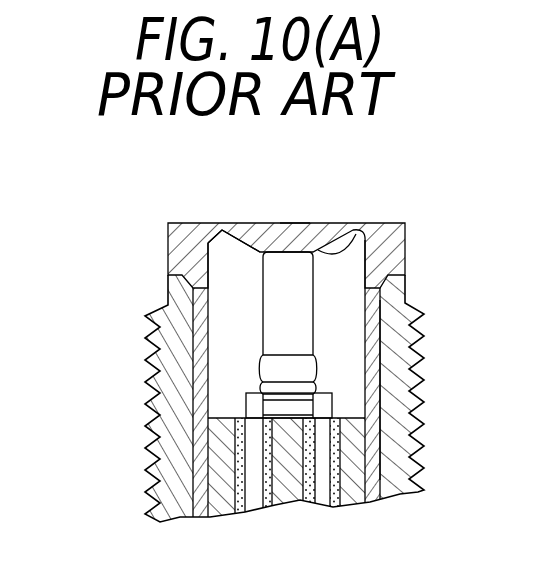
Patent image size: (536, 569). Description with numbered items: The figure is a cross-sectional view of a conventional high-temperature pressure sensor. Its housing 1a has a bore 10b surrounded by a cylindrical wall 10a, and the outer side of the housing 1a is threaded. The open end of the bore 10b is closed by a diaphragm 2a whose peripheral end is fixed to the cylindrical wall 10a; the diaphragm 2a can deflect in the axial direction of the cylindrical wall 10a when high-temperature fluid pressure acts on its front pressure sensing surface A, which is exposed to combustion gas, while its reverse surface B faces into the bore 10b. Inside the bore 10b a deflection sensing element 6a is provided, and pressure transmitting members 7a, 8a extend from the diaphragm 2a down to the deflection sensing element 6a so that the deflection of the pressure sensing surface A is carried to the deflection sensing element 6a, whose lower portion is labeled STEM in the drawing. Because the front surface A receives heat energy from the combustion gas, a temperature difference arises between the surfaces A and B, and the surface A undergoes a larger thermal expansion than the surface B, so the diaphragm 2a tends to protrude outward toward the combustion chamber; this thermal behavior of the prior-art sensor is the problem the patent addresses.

The diaphragm 2a is at (182, 258).
The bore 10b is at (227, 243).
The pressure sensing surface A is at (293, 223).
The reverse surface B is at (350, 232).
The housing 1a is at (434, 421).
The cylindrical wall 10a is at (393, 360).
The pressure transmitting member 7a is at (273, 318).
The pressure transmitting member 8a is at (270, 369).
The deflection sensing element 6a is at (268, 400).
The stem STEM is at (275, 477).